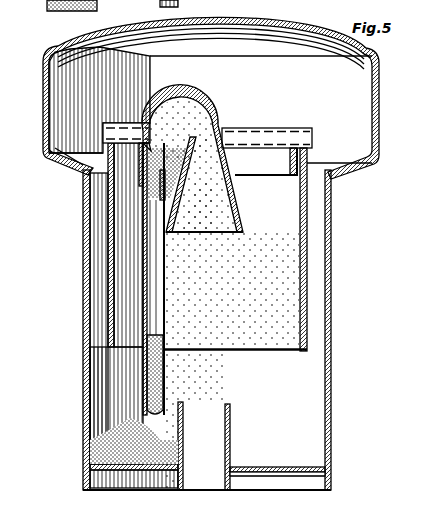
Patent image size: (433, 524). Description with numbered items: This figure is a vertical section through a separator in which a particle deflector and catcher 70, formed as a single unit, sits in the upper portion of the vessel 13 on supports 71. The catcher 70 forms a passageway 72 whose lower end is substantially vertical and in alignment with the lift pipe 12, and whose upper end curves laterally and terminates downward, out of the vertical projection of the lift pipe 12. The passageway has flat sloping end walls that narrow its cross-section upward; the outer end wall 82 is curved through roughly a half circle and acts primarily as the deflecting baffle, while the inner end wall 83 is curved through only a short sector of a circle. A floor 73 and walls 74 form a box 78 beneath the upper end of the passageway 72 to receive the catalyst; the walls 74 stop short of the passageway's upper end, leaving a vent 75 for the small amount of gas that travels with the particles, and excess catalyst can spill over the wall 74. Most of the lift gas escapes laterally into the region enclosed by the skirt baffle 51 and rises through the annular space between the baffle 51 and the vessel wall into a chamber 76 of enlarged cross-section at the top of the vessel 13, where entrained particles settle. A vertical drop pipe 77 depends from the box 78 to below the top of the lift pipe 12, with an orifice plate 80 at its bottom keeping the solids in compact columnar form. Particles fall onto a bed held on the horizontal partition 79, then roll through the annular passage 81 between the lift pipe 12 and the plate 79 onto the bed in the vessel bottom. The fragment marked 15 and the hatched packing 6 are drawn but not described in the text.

The fragment of adjacent figure 15 is at (45, 4).
The packing material 6 is at (96, 80).
The lift pipe 12 is at (231, 408).
The vessel 13 is at (331, 388).
The skirt baffle 51 is at (309, 280).
The particle deflector and catcher 70 is at (183, 91).
The supports 71 is at (253, 127).
The passageway 72 is at (230, 222).
The floor 73 is at (148, 192).
The walls 74 is at (140, 172).
The vent 75 is at (147, 133).
The chamber 76 is at (322, 84).
The vertical drop pipe 77 is at (162, 315).
The box 78 is at (167, 173).
The horizontal partition 79 is at (292, 465).
The orifice plate 80 is at (147, 421).
The annular passage 81 is at (233, 467).
The outer end wall 82 is at (241, 213).
The inner end wall 83 is at (181, 222).